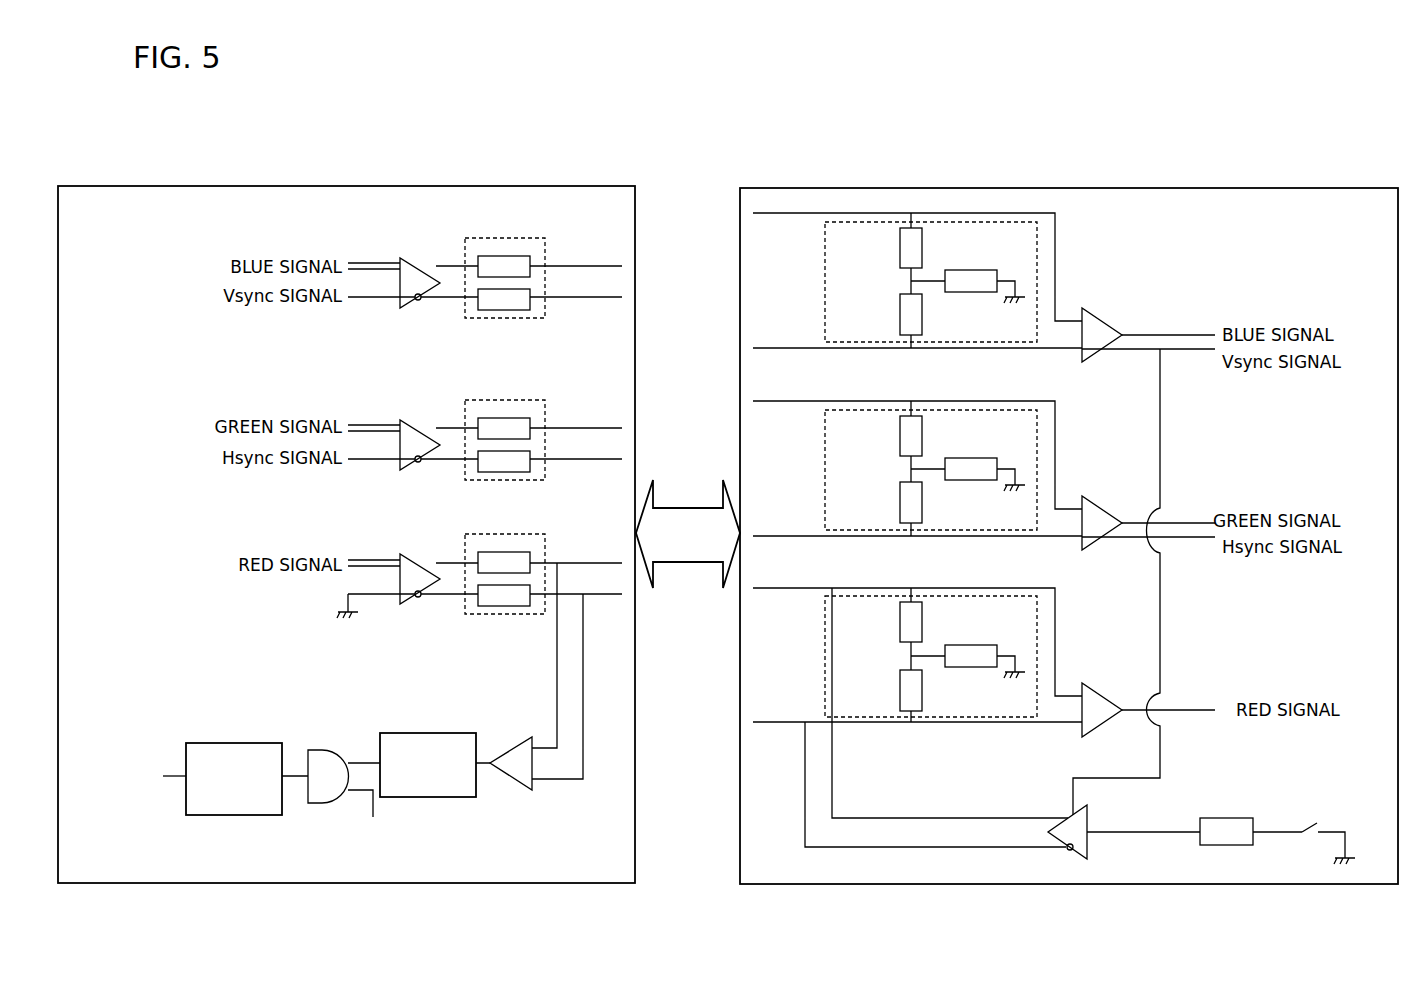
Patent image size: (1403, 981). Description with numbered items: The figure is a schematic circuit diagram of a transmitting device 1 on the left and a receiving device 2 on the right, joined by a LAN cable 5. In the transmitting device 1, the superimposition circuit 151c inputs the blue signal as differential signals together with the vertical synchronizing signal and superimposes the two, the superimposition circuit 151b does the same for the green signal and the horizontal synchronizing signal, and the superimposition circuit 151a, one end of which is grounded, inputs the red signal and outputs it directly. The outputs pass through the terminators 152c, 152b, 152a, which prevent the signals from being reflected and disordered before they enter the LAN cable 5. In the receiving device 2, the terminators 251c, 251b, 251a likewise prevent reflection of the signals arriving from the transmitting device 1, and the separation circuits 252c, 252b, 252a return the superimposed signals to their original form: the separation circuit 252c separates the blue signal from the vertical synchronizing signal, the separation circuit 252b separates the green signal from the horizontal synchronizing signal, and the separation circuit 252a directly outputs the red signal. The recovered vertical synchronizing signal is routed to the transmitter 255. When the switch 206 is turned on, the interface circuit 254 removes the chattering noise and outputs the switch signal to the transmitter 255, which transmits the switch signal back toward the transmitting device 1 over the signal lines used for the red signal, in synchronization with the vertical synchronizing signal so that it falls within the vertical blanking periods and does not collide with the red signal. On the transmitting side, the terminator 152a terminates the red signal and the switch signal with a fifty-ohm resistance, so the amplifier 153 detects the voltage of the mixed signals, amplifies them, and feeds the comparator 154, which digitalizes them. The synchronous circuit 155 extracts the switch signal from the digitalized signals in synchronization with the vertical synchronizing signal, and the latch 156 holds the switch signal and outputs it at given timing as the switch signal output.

The transmitting device 1 is at (358, 186).
The receiving device 2 is at (1065, 186).
The LAN cable 5 is at (687, 506).
The superimposition circuit 151a is at (401, 555).
The superimposition circuit 151b is at (401, 421).
The superimposition circuit 151c is at (401, 259).
The terminator 152a is at (500, 533).
The terminator 152b is at (500, 401).
The terminator 152c is at (500, 239).
The amplifier 153 is at (508, 748).
The comparator 154 is at (430, 732).
The synchronous circuit 155 is at (318, 750).
The latch 156 is at (236, 743).
The terminator 251a is at (825, 656).
The terminator 251b is at (825, 469).
The terminator 251c is at (825, 281).
The separation circuit 252a is at (1076, 694).
The separation circuit 252b is at (1076, 507).
The separation circuit 252c is at (1076, 319).
The interface circuit 254 is at (1218, 818).
The transmitter 255 is at (1088, 817).
The switch 206 is at (1314, 823).